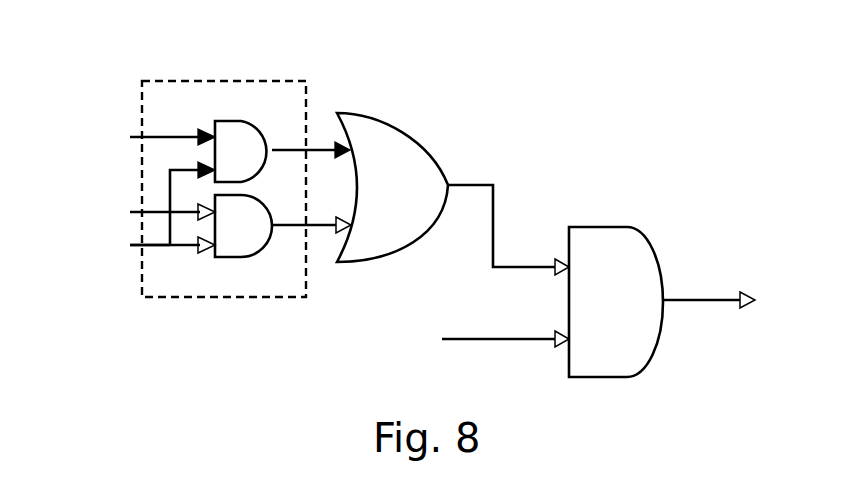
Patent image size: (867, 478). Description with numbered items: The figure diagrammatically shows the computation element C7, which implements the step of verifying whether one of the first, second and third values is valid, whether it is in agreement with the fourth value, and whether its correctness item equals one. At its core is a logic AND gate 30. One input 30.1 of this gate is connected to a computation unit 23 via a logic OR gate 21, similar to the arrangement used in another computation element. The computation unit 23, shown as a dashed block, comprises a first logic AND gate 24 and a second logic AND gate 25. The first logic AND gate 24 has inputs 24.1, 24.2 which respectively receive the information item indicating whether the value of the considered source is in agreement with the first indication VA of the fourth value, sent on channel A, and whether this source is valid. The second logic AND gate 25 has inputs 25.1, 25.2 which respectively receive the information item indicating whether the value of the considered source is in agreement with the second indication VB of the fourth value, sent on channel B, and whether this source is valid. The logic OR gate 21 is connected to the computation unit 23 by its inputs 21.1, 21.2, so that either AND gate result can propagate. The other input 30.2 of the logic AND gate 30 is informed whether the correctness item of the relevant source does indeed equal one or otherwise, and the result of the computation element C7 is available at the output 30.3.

The logic OR gate 21 is at (403, 245).
The input of logic OR gate 21.1 is at (317, 146).
The input of logic OR gate 21.2 is at (318, 229).
The computation unit 23 is at (223, 297).
The first logic AND gate 24 is at (235, 121).
The input of first logic AND gate 24.1 is at (172, 135).
The input of first logic AND gate 24.2 is at (168, 188).
The second logic AND gate 25 is at (265, 256).
The input of second logic AND gate 25.1 is at (155, 212).
The input of second logic AND gate 25.2 is at (155, 246).
The logic AND gate 30 is at (660, 338).
The input of logic AND gate 30.1 is at (523, 265).
The input of logic AND gate 30.2 is at (505, 341).
The output of logic AND gate 30.3 is at (705, 300).
The computation element C7 is at (172, 347).